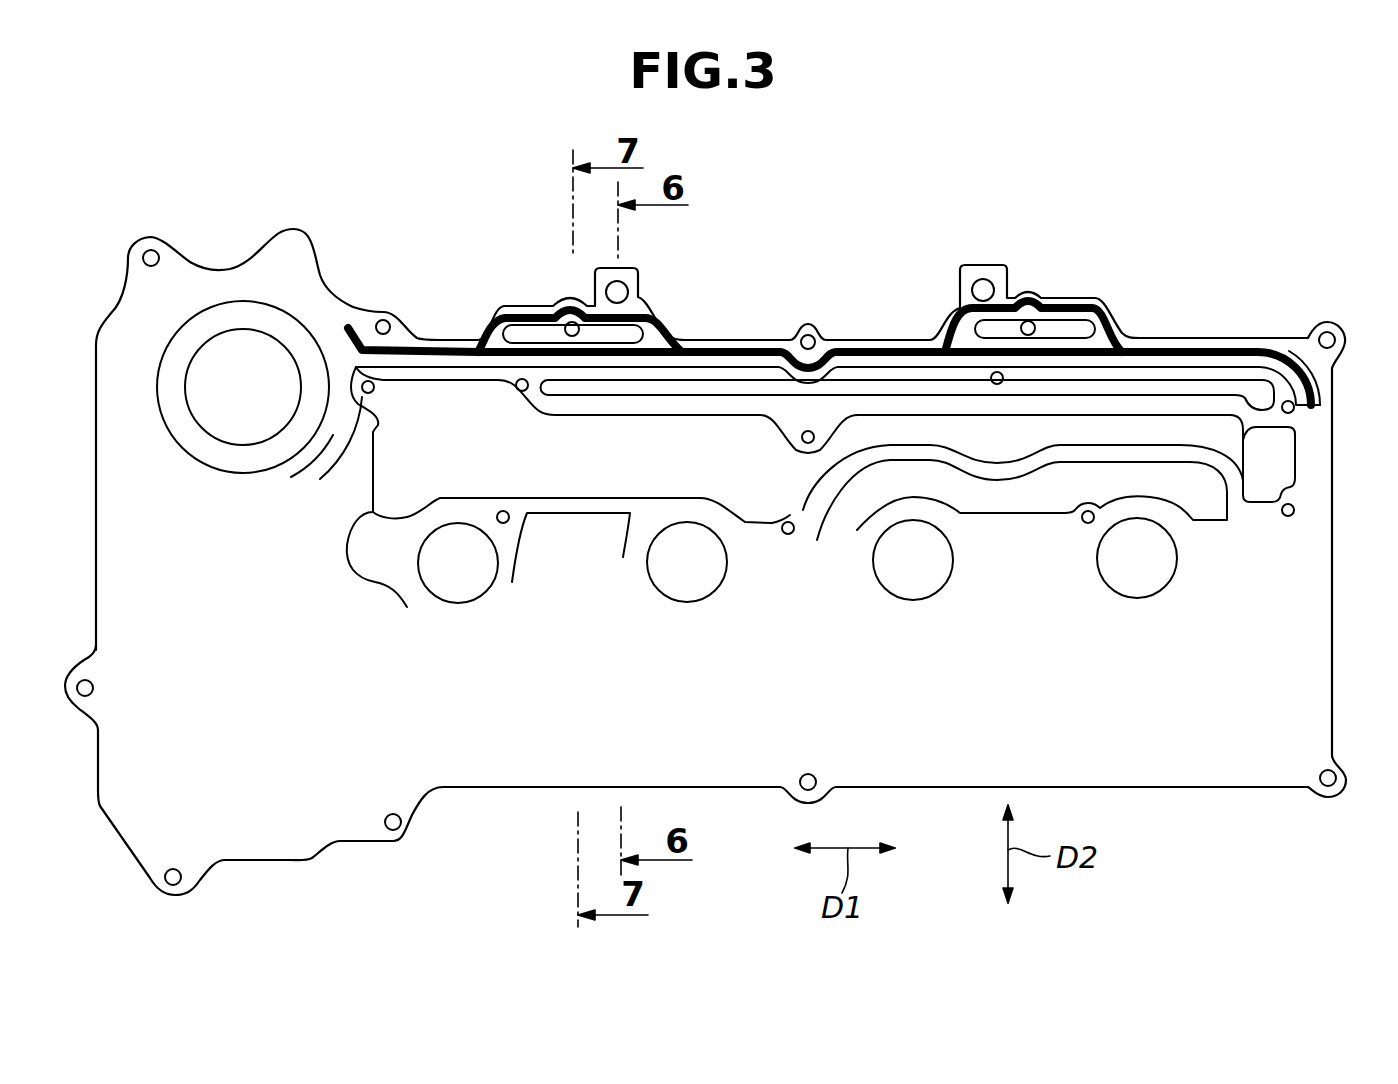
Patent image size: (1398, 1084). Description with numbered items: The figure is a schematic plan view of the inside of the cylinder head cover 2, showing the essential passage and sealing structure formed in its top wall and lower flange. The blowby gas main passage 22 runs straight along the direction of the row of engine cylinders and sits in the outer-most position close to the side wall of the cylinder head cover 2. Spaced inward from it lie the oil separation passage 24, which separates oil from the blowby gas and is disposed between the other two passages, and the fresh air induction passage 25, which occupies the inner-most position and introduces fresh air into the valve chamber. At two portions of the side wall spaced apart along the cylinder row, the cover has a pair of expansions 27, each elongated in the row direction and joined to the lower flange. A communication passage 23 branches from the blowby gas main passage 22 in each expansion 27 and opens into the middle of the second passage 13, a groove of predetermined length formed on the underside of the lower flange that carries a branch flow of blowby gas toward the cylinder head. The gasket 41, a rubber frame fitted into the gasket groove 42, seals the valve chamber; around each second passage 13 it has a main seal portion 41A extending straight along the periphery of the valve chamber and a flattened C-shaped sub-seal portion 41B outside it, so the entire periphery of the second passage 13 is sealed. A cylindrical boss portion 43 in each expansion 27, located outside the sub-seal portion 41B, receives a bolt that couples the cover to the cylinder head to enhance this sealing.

The cylinder head cover 2 is at (1248, 316).
The second passage 13 is at (530, 335).
The blowby gas main passage 22 is at (735, 385).
The communication passage 23 is at (570, 320).
The oil separation passage 24 is at (870, 430).
The fresh air induction passage 25 is at (1197, 480).
The expansion 27 is at (490, 322).
The gasket 41 is at (767, 349).
The main seal portion 41A is at (1118, 346).
The sub-seal portion 41B is at (955, 312).
The gasket groove 42 is at (687, 349).
The boss portion 43 is at (638, 277).